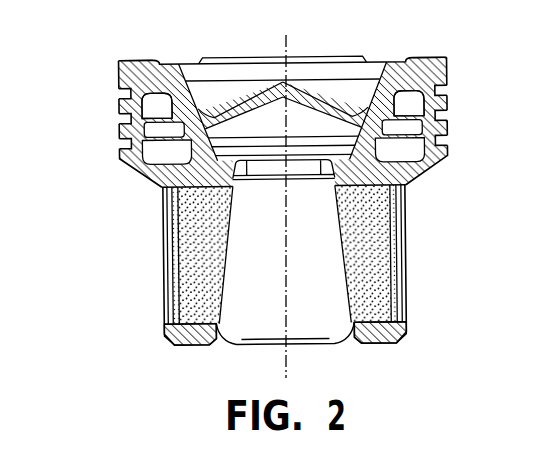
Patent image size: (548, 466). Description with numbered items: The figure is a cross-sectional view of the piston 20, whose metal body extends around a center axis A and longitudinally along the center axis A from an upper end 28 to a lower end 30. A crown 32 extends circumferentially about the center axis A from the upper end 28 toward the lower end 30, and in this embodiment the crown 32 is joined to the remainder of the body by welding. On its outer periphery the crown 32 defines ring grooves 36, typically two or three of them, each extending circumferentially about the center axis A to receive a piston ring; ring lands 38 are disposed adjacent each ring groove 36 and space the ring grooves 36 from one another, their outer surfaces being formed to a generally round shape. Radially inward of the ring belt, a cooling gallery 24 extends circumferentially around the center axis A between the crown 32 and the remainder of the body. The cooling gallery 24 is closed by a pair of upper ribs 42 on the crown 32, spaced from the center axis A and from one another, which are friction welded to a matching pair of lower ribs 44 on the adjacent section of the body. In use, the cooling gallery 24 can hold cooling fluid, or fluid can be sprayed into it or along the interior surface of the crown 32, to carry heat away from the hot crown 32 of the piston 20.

The piston 20 is at (100, 50).
The cooling gallery 24 is at (177, 159).
The upper end 28 is at (137, 59).
The lower end 30 is at (187, 346).
The crown 32 is at (116, 75).
The ring groove 36 is at (440, 86).
The ring land 38 is at (447, 100).
The upper rib 42 is at (132, 103).
The lower rib 44 is at (133, 137).
The center axis A is at (274, 38).